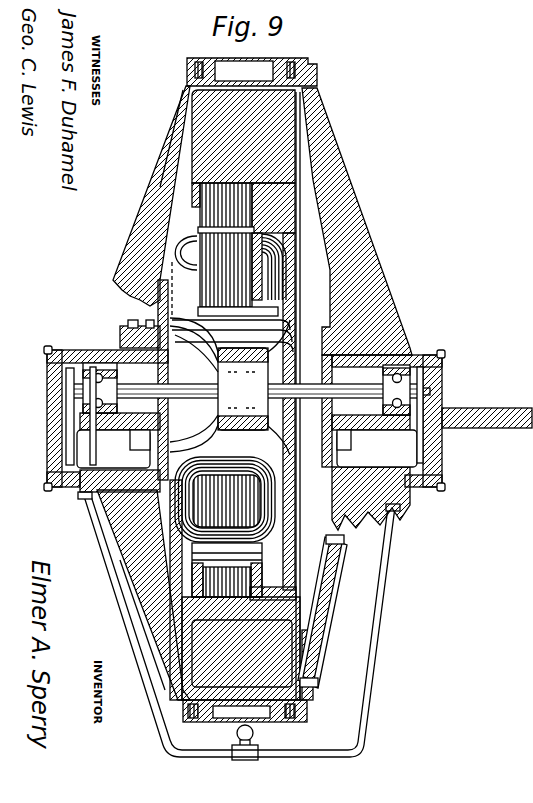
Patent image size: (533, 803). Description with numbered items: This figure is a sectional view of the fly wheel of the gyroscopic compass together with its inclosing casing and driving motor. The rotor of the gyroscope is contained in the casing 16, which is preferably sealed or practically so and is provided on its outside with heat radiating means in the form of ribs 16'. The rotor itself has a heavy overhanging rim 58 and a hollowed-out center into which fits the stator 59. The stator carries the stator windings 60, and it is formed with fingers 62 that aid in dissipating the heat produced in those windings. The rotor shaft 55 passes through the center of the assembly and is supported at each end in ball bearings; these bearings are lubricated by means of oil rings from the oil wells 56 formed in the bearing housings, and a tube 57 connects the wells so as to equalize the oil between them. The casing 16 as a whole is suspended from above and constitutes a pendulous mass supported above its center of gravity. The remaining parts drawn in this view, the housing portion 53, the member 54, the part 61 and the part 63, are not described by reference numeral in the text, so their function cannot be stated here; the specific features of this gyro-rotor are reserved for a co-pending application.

The casing 16 is at (201, 424).
The ribs 16' is at (132, 390).
The housing cap 53 is at (297, 112).
The partition plate 54 is at (306, 396).
The rotor shaft 55 is at (430, 380).
The oil wells 56 is at (90, 448).
The tube 57 is at (93, 505).
The overhanging rim 58 is at (193, 212).
The stator 59 is at (217, 286).
The stator windings 60 is at (266, 238).
The coil end 61 is at (178, 243).
The fingers 62 is at (150, 443).
The terminal block 63 is at (148, 300).